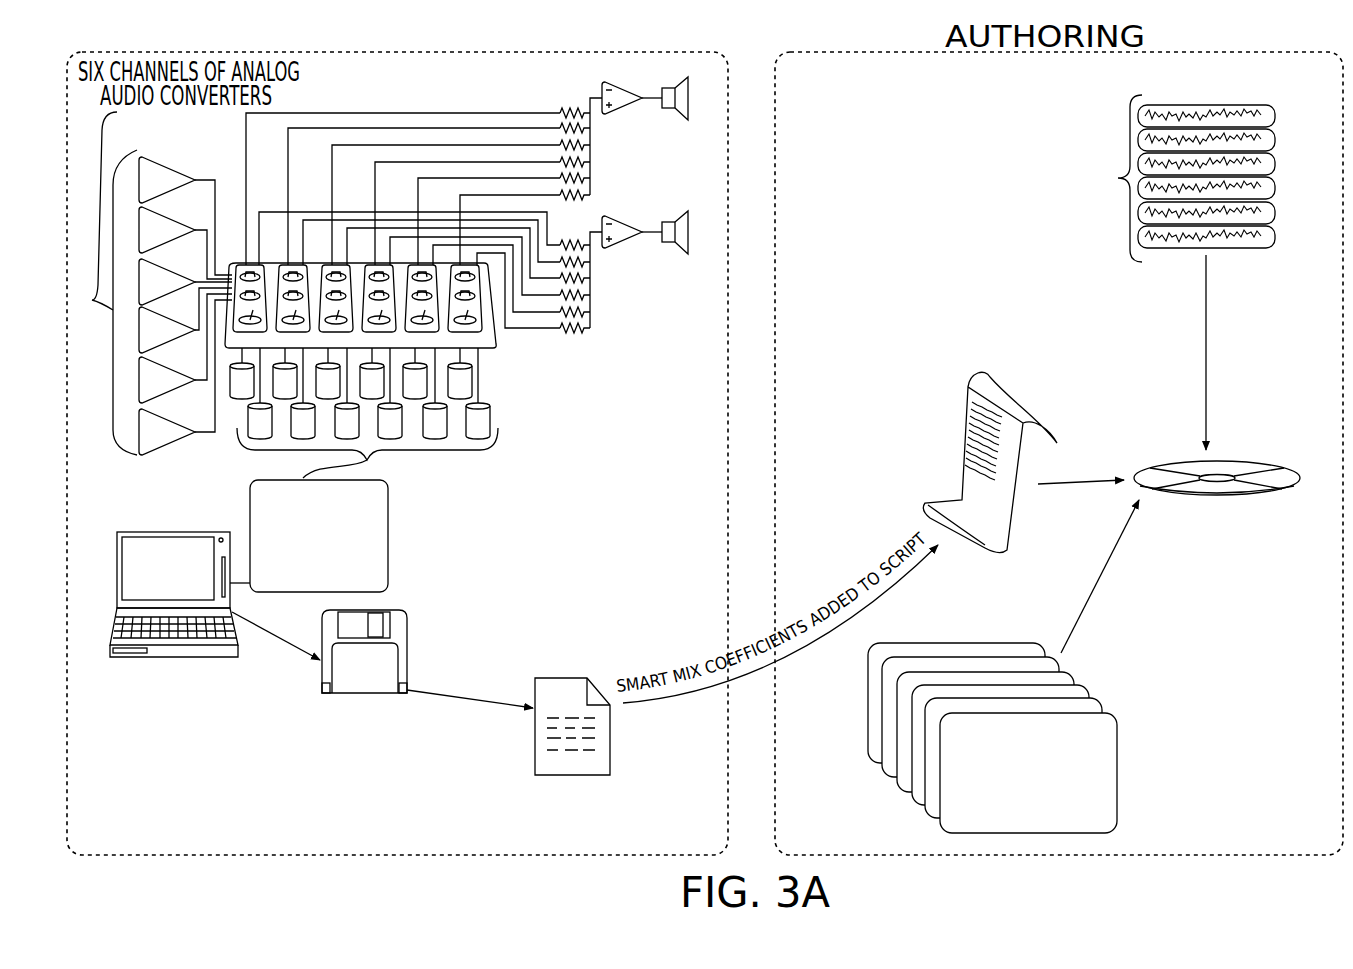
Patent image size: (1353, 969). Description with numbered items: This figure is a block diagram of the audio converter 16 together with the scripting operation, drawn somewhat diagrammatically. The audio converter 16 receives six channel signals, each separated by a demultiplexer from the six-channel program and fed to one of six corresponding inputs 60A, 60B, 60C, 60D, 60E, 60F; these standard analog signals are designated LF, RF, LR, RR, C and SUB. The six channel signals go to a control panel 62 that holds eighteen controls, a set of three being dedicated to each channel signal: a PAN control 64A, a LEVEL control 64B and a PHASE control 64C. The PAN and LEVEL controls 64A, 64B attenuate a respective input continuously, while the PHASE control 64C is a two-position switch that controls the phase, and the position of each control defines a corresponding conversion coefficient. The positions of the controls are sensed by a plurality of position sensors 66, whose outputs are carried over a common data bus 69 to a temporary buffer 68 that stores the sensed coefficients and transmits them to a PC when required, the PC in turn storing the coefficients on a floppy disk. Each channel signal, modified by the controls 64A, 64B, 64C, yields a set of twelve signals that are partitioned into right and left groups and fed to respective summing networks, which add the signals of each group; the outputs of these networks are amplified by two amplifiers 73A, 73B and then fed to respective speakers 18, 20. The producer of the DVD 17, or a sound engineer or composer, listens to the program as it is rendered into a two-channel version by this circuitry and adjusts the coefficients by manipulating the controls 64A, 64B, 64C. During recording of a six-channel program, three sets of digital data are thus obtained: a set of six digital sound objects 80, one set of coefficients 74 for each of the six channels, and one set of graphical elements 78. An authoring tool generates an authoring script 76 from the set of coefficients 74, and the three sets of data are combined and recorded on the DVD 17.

The audio converter 16 is at (696, 382).
The DVD 17 is at (1227, 461).
The speaker 18 is at (667, 87).
The speaker 20 is at (688, 237).
The input 60A is at (160, 158).
The input 60B is at (152, 205).
The input 60C is at (152, 256).
The input 60D is at (152, 306).
The input 60E is at (152, 356).
The input 60F is at (152, 406).
The control panel 62 is at (344, 343).
The PAN control 64A is at (250, 270).
The LEVEL control 64B is at (248, 296).
The PHASE control 64C is at (245, 320).
The position sensors 66 is at (571, 350).
The temporary buffer 68 is at (388, 484).
The common data bus 69 is at (367, 460).
The amplifier 73A is at (605, 83).
The amplifier 73B is at (605, 216).
The set of coefficients 74 is at (588, 775).
The authoring script 76 is at (968, 418).
The set of graphical elements 78 is at (1113, 715).
The digital sound objects 80 is at (1138, 272).